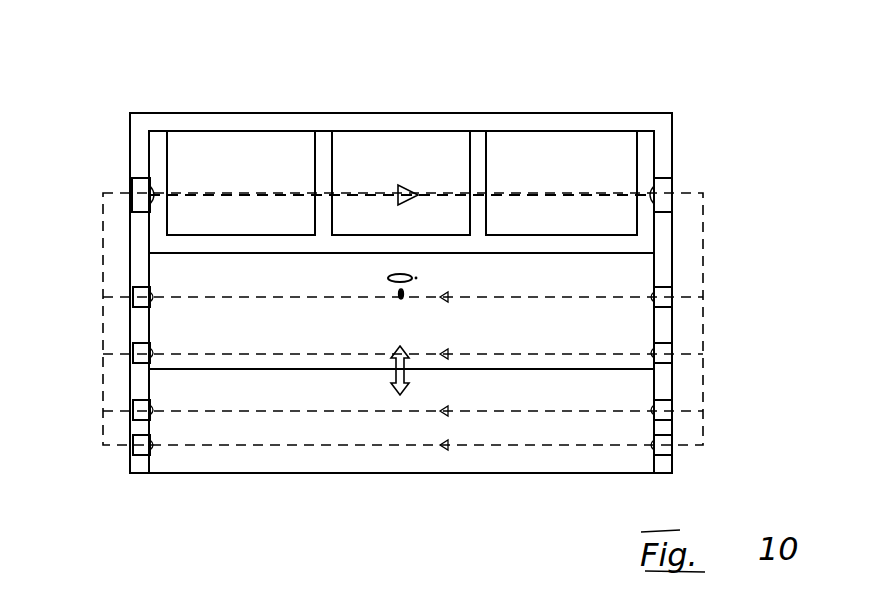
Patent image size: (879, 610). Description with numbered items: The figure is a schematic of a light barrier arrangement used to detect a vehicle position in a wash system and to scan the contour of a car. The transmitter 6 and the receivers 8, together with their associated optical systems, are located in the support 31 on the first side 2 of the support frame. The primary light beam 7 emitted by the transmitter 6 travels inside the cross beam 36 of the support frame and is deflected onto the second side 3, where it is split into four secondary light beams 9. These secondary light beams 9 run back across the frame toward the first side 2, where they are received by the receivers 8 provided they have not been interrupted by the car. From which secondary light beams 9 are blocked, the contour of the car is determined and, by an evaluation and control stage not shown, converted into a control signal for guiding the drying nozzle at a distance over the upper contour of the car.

The first side 2 is at (112, 152).
The second side 3 is at (676, 112).
The support 31 is at (135, 138).
The cross beam 36 is at (410, 120).
The primary light beam 7 is at (525, 192).
The transmitter 6 is at (130, 188).
The receiver 8 is at (133, 437).
The secondary light beams 9 is at (584, 353).